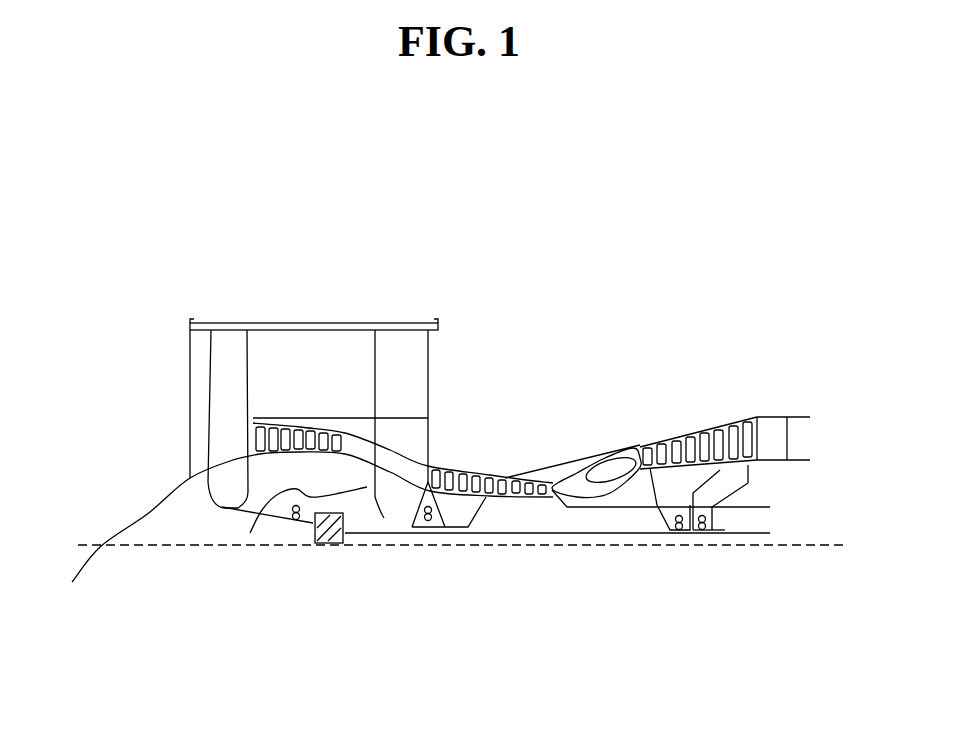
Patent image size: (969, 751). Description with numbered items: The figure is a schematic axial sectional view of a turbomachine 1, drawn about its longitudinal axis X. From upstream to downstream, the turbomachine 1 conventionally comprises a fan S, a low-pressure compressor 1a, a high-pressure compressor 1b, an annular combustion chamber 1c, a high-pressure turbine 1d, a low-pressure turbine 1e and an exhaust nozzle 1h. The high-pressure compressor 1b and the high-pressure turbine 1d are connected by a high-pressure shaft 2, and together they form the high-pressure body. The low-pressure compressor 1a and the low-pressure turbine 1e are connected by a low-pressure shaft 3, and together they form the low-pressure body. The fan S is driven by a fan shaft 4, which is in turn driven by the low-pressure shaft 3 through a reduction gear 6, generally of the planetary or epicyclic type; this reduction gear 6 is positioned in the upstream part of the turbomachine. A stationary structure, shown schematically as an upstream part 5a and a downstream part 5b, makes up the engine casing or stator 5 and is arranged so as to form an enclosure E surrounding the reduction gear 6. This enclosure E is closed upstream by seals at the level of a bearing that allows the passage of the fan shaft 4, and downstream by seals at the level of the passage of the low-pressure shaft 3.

The turbomachine 1 is at (538, 356).
The low-pressure compressor 1a is at (274, 426).
The high-pressure compressor 1b is at (458, 469).
The annular combustion chamber 1c is at (600, 473).
The high-pressure turbine 1d is at (645, 460).
The low-pressure turbine 1e is at (750, 414).
The exhaust nozzle 1h is at (798, 436).
The high-pressure shaft 2 is at (594, 510).
The low-pressure shaft 3 is at (540, 535).
The fan shaft 4 is at (277, 527).
The engine casing or stator 5 is at (360, 483).
The upstream part 5a is at (290, 512).
The downstream part 5b is at (384, 518).
The reduction gear 6 is at (330, 546).
The enclosure E is at (353, 517).
The fan S is at (212, 384).
The engine axis X is at (455, 531).